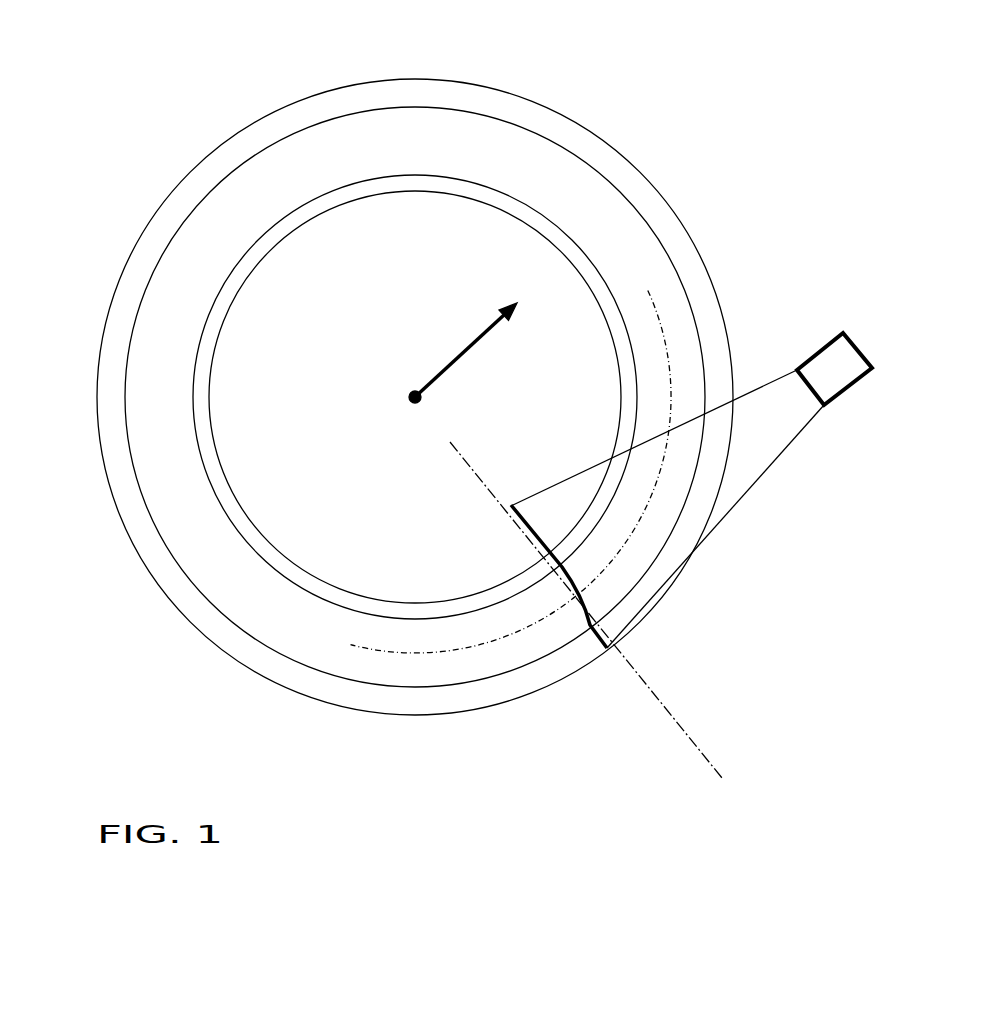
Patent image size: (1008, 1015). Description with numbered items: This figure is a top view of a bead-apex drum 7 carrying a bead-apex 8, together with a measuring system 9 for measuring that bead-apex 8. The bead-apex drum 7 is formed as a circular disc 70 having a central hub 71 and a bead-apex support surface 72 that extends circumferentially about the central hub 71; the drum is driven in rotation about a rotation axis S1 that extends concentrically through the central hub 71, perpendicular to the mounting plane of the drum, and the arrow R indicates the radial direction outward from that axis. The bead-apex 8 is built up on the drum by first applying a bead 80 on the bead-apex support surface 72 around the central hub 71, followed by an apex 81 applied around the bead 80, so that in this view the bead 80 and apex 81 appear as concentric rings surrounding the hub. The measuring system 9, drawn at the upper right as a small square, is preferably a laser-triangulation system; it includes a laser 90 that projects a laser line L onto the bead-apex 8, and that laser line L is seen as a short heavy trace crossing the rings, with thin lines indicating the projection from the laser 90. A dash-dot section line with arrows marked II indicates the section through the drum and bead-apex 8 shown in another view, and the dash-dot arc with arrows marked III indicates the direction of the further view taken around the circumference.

The bead-apex drum 7 is at (277, 128).
The bead-apex 8 is at (368, 140).
The measuring system 9 is at (805, 317).
The circular disc 70 is at (223, 162).
The central hub 71 is at (270, 278).
The bead-apex support surface 72 is at (138, 267).
The bead 80 is at (200, 398).
The apex 81 is at (180, 468).
The laser 90 is at (838, 383).
The rotation axis S1 is at (410, 392).
The radial direction R is at (466, 350).
The laser line L is at (593, 638).
The section line II is at (453, 466).
The section arc III is at (415, 667).